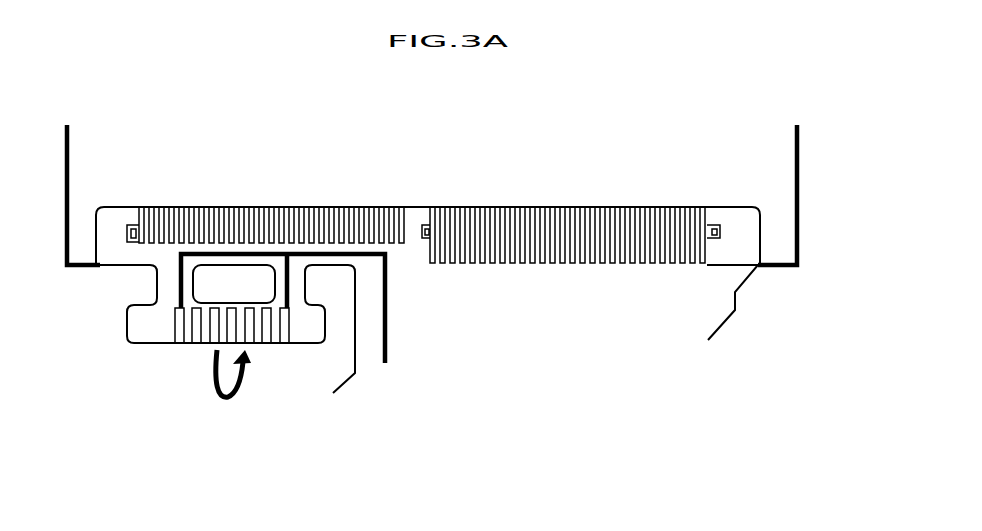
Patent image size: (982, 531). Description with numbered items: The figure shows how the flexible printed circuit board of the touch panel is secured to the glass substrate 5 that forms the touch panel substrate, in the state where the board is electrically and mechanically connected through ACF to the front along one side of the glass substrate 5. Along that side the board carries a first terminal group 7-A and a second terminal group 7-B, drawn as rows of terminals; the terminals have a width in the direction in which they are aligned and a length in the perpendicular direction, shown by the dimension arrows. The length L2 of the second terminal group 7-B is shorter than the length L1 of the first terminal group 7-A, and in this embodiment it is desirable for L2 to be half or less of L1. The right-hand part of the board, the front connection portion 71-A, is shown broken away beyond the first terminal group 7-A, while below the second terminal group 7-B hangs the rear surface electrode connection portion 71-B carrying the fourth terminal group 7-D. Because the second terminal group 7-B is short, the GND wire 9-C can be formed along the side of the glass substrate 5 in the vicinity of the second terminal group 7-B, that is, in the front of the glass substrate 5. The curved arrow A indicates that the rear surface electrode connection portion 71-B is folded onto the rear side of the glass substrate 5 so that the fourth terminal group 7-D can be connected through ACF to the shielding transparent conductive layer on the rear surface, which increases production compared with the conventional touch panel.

The glass substrate 5 is at (778, 155).
The first terminal group 7-A is at (710, 199).
The second terminal group 7-B is at (407, 199).
The fourth terminal group 7-D is at (268, 333).
The GND wire 9-C is at (387, 325).
The front surface connection portion of flexible printed circuit board 71-A is at (702, 315).
The rear surface electrode connection portion 71-B is at (147, 320).
The folding direction A is at (241, 396).
The length of first terminal group L1 is at (768, 265).
The length of second terminal group L2 is at (87, 243).